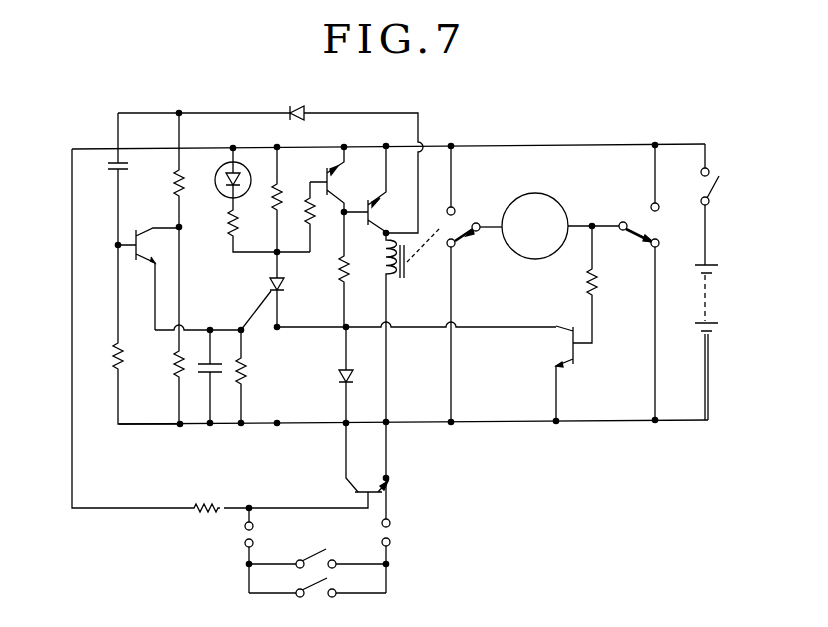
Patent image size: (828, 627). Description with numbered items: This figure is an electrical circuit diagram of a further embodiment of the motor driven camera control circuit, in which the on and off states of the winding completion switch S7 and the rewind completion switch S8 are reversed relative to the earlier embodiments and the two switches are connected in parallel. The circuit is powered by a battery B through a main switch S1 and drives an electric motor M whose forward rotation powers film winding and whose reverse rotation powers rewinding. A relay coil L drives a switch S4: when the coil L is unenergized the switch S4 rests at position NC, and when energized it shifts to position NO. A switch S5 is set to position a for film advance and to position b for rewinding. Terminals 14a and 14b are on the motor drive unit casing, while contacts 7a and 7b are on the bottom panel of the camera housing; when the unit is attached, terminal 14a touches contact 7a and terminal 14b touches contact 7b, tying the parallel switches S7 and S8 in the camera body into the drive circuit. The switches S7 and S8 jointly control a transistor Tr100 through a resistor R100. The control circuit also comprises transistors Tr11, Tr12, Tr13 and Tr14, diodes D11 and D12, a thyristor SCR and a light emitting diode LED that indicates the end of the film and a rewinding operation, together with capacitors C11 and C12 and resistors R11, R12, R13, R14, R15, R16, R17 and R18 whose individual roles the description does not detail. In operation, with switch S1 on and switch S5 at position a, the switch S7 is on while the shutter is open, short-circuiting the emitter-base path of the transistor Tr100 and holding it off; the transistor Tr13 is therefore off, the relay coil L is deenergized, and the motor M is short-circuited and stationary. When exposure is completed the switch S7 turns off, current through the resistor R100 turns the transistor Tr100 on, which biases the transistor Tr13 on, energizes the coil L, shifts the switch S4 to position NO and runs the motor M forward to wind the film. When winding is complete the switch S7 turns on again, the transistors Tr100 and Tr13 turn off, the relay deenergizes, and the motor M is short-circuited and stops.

The capacitor C11 is at (104, 226).
The resistor R11 is at (367, 325).
The transistor Tr11 is at (148, 279).
The resistor R12 is at (192, 170).
The resistor R13 is at (168, 325).
The capacitor C12 is at (217, 377).
The resistor R14 is at (254, 377).
The light emitting diode LED is at (238, 166).
The resistor R15 is at (269, 229).
The resistor R16 is at (290, 212).
The thyristor SCR is at (280, 303).
The resistor R17 is at (322, 217).
The transistor Tr12 is at (349, 179).
The resistor R18 is at (357, 269).
The transistor Tr13 is at (379, 190).
The diode D12 is at (295, 100).
The relay coil L is at (413, 353).
The diode D11 is at (360, 409).
The switch position NO is at (437, 186).
The switch position NC is at (461, 331).
The relay-driven switch S4 is at (478, 221).
The electric motor M is at (560, 226).
The reversing switch S5 is at (642, 227).
The switch position a is at (661, 326).
The switch position b is at (661, 182).
The main switch S1 is at (720, 204).
The battery B is at (708, 342).
The transistor Tr14 is at (549, 373).
The resistor R100 is at (202, 496).
The transistor Tr100 is at (348, 494).
The terminal 14a is at (401, 509).
The terminal 14b is at (232, 525).
The contact 7a is at (397, 565).
The contact 7b is at (259, 565).
The winding completion switch S7 is at (317, 549).
The rewind completion switch S8 is at (317, 601).